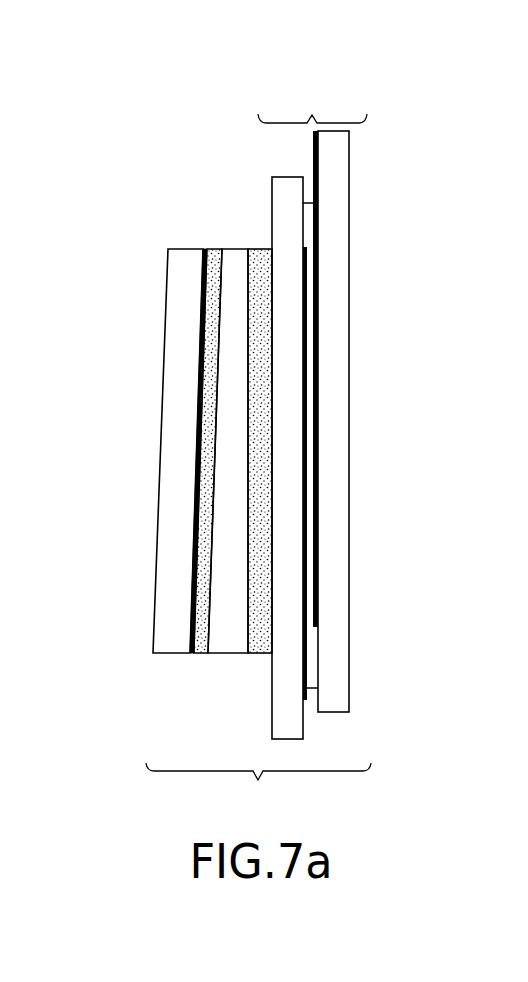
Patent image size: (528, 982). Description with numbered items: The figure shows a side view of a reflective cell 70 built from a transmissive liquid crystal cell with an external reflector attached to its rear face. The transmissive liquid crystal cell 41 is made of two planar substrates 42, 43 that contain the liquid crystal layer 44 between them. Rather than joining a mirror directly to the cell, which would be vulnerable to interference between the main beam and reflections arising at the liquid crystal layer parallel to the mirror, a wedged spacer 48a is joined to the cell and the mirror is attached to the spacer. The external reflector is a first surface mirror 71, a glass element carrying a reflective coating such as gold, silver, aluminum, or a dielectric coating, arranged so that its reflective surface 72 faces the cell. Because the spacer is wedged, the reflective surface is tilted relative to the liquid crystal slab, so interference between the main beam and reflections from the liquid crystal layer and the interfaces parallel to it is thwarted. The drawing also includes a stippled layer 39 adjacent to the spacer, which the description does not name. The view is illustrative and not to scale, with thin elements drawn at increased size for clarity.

The second layer 39 is at (255, 653).
The transmissive liquid crystal cell 41 is at (312, 352).
The planar substrate 42 is at (348, 685).
The planar substrate 43 is at (272, 722).
The liquid crystal layer 44 is at (312, 655).
The wedged spacer 48a is at (233, 249).
The reflective cell 70 is at (258, 790).
The first surface mirror 71 is at (163, 653).
The reflective surface 72 is at (202, 310).